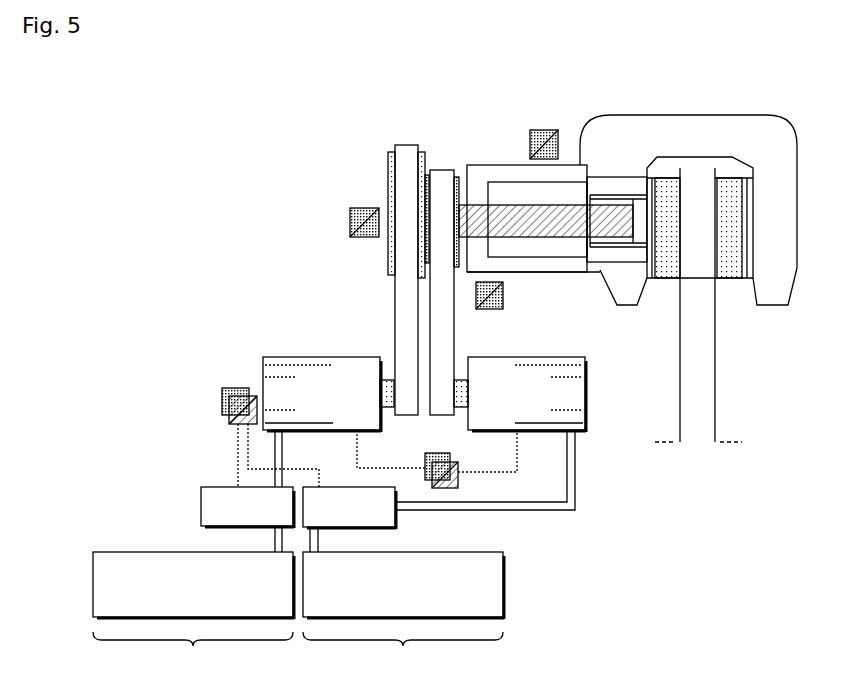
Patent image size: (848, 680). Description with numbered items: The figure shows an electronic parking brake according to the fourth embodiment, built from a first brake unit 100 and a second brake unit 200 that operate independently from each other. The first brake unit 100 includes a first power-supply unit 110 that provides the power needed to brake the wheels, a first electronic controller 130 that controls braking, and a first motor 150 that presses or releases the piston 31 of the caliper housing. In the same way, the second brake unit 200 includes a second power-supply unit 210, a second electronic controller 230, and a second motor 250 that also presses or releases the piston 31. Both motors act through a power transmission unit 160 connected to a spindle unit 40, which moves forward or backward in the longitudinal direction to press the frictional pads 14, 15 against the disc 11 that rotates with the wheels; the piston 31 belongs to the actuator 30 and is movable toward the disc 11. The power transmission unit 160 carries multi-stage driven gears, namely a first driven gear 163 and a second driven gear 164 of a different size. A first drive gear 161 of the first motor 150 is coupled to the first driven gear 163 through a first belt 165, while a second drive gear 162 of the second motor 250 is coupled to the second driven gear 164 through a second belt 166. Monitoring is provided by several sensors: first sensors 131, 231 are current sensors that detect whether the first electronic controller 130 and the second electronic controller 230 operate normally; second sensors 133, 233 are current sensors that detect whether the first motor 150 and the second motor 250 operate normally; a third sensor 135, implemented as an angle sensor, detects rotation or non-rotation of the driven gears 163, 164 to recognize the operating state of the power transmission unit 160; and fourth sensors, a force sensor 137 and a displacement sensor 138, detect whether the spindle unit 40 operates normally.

The first brake unit 100 is at (299, 385).
The first power-supply unit 110 is at (93, 584).
The first electronic controller 130 is at (201, 505).
The first sensor 131 is at (222, 400).
The second sensor 133 is at (425, 463).
The third sensor 135 is at (350, 225).
The force sensor 137 is at (504, 293).
The displacement sensor 138 is at (545, 130).
The first motor 150 is at (303, 357).
The power transmission unit 160 is at (370, 156).
The first drive gear 161 is at (386, 380).
The second drive gear 162 is at (450, 439).
The first driven gear 163 is at (388, 152).
The second driven gear 164 is at (458, 175).
The first belt 165 is at (395, 300).
The second belt 166 is at (455, 336).
The second brake unit 200 is at (444, 497).
The second power-supply unit 210 is at (503, 588).
The second electronic controller 230 is at (333, 487).
The first sensor 231 is at (229, 418).
The second sensor 233 is at (458, 477).
The second motor 250 is at (568, 357).
The spindle unit 40 is at (513, 208).
The actuator 30 is at (612, 190).
The piston 31 is at (635, 203).
The disc 11 is at (715, 364).
The frictional pad 14 is at (730, 279).
The frictional pad 15 is at (662, 279).